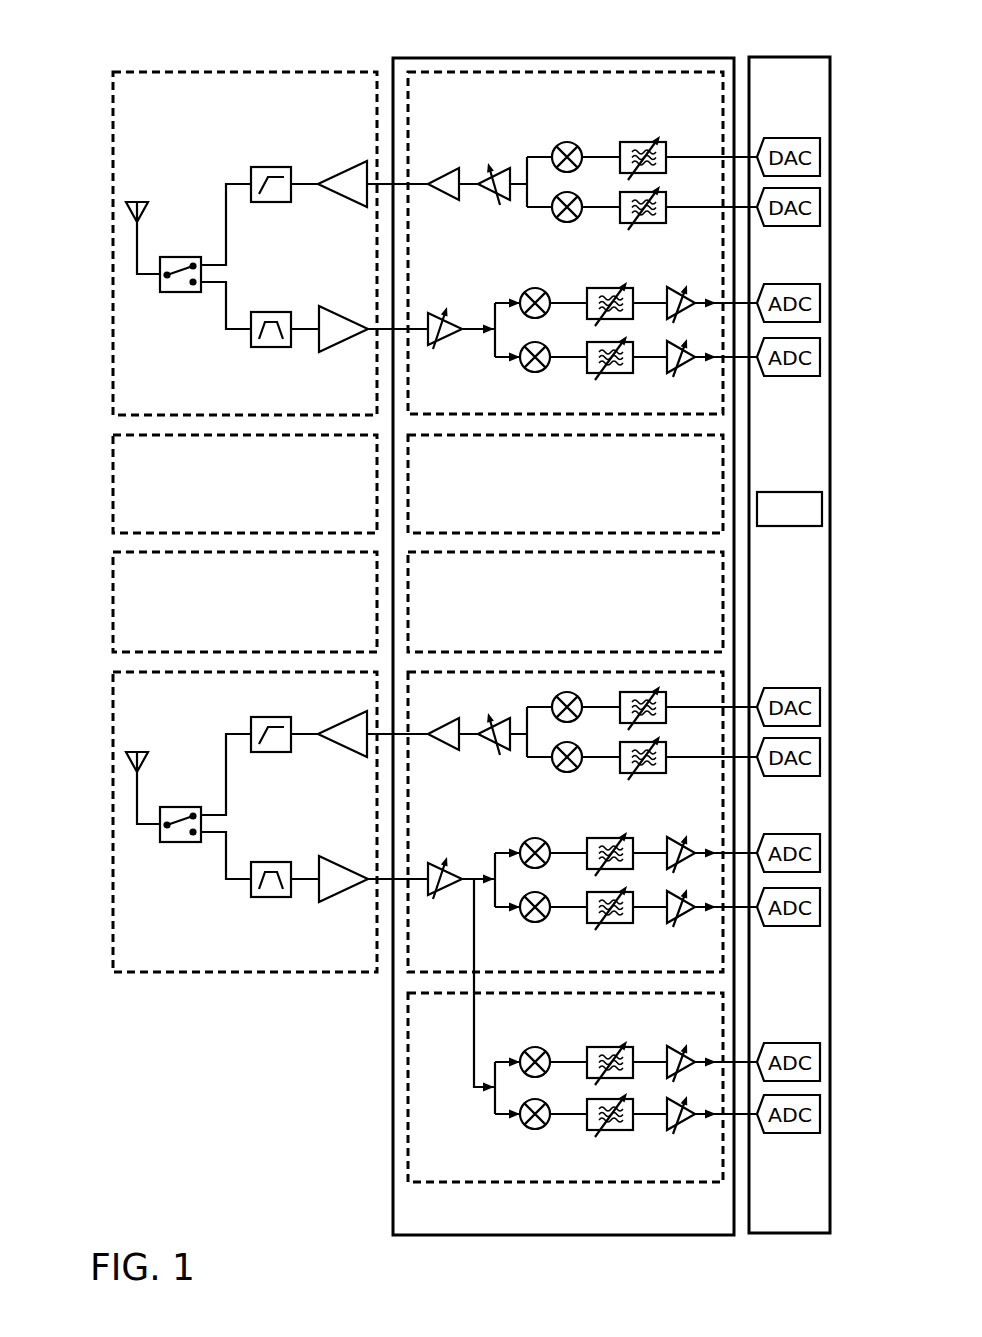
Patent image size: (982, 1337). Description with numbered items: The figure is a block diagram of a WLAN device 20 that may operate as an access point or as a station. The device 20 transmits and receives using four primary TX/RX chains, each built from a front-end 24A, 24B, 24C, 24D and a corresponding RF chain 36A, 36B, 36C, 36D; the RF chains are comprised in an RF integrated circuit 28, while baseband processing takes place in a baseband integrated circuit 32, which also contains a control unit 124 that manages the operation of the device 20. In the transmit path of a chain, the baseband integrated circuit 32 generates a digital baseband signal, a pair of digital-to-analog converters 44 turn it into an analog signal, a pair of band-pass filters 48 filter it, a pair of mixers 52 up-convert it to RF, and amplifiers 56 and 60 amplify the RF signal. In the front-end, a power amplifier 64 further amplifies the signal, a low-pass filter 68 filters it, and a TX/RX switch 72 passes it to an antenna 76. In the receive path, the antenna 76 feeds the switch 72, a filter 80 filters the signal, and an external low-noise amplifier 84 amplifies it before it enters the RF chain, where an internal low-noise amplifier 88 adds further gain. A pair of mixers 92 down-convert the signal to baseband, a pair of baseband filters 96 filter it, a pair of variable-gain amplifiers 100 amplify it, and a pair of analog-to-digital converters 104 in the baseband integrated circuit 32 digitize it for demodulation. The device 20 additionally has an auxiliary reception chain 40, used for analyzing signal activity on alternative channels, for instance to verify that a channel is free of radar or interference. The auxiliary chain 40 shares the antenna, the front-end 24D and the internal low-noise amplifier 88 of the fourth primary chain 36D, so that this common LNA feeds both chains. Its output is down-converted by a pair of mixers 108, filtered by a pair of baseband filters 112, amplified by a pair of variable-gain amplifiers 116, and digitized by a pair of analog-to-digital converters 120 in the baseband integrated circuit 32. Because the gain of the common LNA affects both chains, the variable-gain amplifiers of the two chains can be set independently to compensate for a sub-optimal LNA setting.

The WLAN device 20 is at (103, 47).
The front-end 24A is at (113, 278).
The front-end 24B is at (113, 488).
The front-end 24C is at (113, 603).
The front-end 24D is at (113, 826).
The RF Integrated Circuit 28 is at (393, 1150).
The Baseband Integrated Circuit 32 is at (790, 1233).
The RF chain 36A is at (461, 402).
The RF chain 36B is at (459, 469).
The RF chain 36C is at (459, 586).
The RF chain 36D is at (461, 706).
The auxiliary reception chain 40 is at (407, 1090).
The DAC 44 is at (820, 162).
The Band-Pass Filters 48 is at (652, 142).
The mixers 52 is at (560, 142).
The amplifier 56 is at (498, 200).
The amplifier 60 is at (440, 169).
The Power Amplifier 64 is at (338, 168).
The Low-Pass Filter 68 is at (262, 167).
The TX/RX switch 72 is at (178, 257).
The antenna 76 is at (140, 202).
The filter 80 is at (268, 312).
The Low-Noise Amplifier 84 is at (341, 310).
The LNA 88 is at (434, 315).
The mixers 92 is at (546, 288).
The baseband filters 96 is at (615, 372).
The Variable-Gain Amplifiers 100 is at (683, 364).
The Analog-to-Digital Converters 104 is at (820, 308).
The mixers 108 is at (540, 1018).
The baseband filters 112 is at (615, 1130).
The Variable-Gain Amplifiers 116 is at (661, 1046).
The Analog-to-Digital Converters 120 is at (820, 1066).
The control unit 124 is at (822, 512).